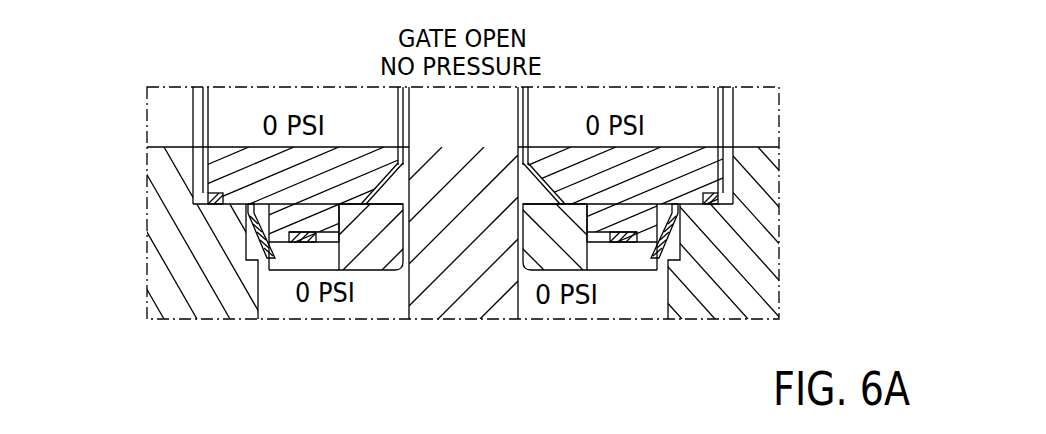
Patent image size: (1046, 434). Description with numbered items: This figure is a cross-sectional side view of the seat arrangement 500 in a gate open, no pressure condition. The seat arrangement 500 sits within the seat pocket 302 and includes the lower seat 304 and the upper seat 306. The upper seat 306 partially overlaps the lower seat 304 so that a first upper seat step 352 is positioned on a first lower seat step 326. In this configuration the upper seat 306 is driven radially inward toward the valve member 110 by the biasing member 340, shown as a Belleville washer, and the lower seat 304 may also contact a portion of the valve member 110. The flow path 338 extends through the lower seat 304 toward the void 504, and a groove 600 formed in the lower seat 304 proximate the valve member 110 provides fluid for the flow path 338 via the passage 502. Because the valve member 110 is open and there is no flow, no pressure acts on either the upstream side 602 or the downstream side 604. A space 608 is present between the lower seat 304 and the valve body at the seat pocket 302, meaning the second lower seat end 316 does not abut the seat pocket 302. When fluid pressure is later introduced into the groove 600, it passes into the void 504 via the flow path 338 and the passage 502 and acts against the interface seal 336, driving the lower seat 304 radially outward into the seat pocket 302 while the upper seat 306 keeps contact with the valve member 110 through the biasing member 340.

The seat arrangement 500 is at (163, 73).
The upstream side 602 is at (102, 97).
The downstream side 604 is at (835, 97).
The seat pocket 302 is at (168, 172).
The valve member 110 is at (478, 265).
The lower seat 304 is at (233, 168).
The first lower seat step 326 is at (577, 163).
The second lower seat end 316 is at (707, 138).
The space 608 is at (193, 203).
The groove 600 is at (400, 148).
The passage 502 is at (523, 197).
The void 504 is at (378, 218).
The first upper seat step 352 is at (577, 237).
The flow path 338 is at (396, 272).
The interface seal 336 is at (620, 238).
The biasing member 340 is at (255, 240).
The upper seat 306 is at (270, 258).